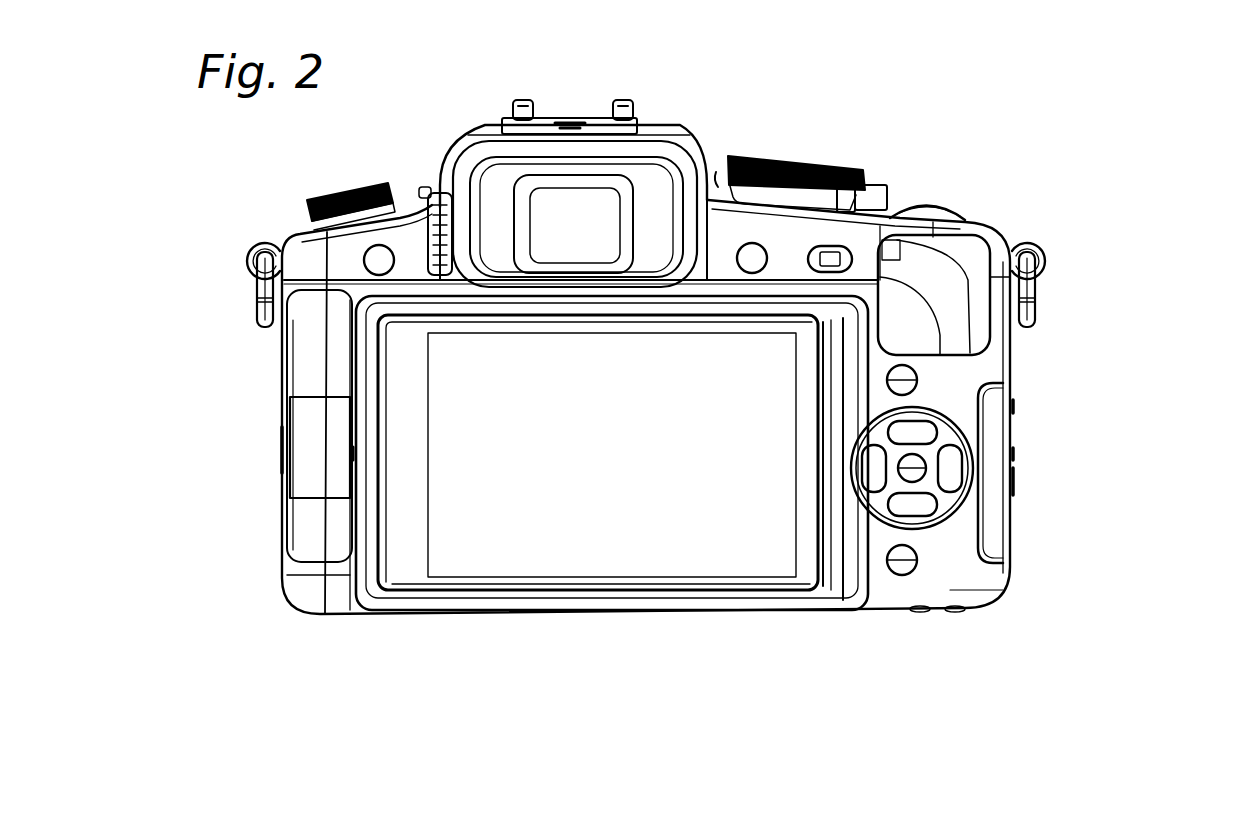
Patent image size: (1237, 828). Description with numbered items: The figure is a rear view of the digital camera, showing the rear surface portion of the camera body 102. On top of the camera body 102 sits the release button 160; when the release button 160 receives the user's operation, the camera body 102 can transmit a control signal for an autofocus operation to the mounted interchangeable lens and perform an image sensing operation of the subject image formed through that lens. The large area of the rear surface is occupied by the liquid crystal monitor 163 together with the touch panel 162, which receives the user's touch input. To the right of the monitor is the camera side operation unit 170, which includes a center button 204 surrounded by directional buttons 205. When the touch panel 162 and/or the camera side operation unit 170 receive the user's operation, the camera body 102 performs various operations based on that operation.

The camera body 102 is at (249, 173).
The release button 160 is at (950, 198).
The touch panel 162 is at (630, 540).
The liquid crystal monitor 163 is at (612, 453).
The camera side operation unit 170 is at (1143, 260).
The center button 204 is at (913, 466).
The directional buttons 205 is at (939, 397).